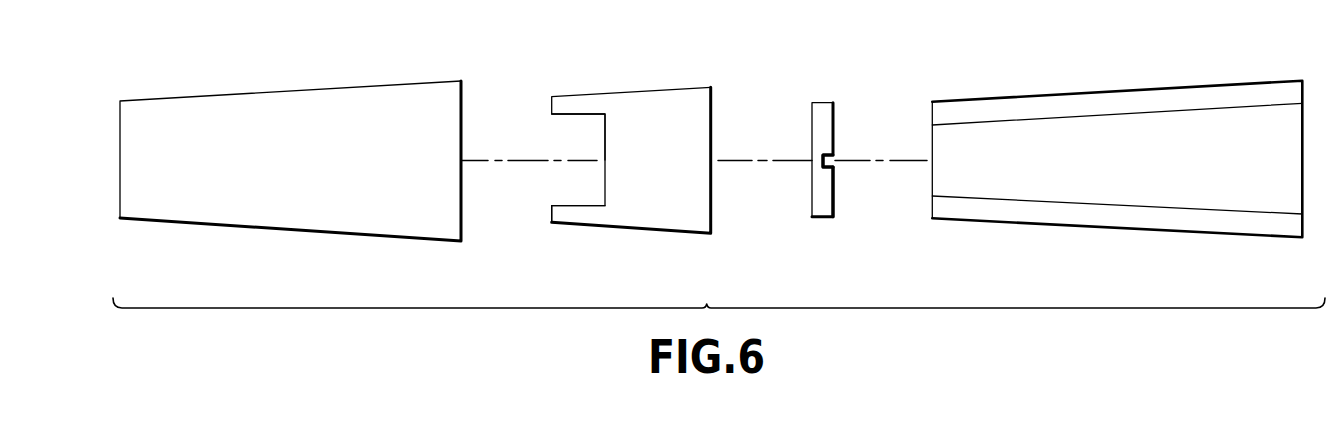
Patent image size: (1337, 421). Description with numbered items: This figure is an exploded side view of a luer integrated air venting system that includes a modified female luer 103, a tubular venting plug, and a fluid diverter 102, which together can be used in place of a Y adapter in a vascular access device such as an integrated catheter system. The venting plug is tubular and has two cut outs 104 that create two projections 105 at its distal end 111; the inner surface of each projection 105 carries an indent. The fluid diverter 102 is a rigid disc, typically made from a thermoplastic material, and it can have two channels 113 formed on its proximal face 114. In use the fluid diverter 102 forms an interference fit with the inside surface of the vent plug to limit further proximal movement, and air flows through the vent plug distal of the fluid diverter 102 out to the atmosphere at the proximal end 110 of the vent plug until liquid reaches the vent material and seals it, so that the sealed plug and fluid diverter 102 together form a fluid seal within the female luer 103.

The fluid diverter 102 is at (821, 212).
The modified female luer 103 is at (187, 96).
The cut outs 104 is at (567, 148).
The projections 105 is at (580, 218).
The proximal end 110 is at (712, 111).
The distal end 111 is at (551, 220).
The channels 113 is at (833, 156).
The proximal face 114 is at (834, 198).